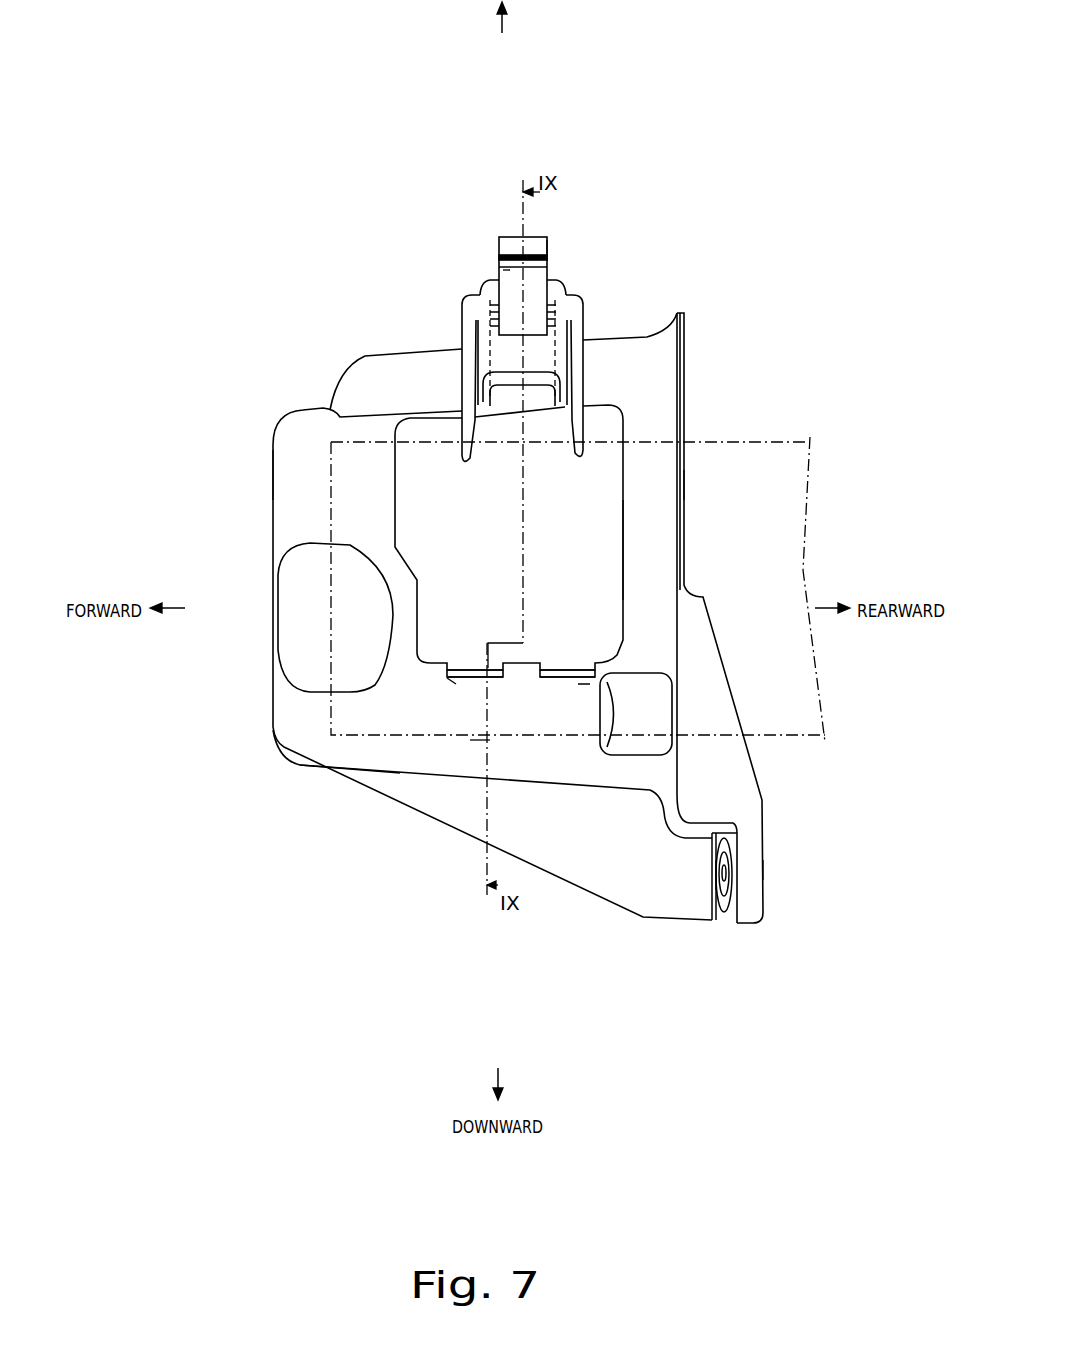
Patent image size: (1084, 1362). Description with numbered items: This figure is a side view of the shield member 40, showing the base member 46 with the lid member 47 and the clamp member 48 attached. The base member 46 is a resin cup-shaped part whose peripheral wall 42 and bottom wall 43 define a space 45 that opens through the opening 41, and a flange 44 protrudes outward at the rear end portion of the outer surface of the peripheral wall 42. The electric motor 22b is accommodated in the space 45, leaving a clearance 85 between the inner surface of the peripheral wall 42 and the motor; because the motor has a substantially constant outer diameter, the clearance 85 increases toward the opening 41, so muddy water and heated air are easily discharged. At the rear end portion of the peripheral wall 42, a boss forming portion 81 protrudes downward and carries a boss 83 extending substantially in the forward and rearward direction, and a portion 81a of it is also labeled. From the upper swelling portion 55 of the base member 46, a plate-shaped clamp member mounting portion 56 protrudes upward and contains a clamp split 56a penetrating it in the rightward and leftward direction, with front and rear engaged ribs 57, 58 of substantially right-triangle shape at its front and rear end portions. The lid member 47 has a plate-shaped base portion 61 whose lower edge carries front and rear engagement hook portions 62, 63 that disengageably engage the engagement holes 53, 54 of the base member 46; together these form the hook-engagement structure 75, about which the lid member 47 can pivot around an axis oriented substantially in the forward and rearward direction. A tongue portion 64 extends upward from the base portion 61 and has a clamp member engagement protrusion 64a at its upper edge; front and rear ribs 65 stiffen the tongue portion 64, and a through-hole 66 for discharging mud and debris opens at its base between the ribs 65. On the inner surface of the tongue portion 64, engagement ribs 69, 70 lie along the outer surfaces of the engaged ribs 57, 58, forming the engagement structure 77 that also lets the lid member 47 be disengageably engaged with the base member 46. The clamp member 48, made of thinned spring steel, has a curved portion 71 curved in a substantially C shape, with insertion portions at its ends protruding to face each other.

The electric motor 22b is at (330, 707).
The shield member 40 is at (752, 238).
The opening 41 is at (684, 482).
The peripheral wall 42 is at (355, 428).
The bottom wall 43 is at (273, 472).
The flange 44 is at (678, 310).
The space 45 is at (302, 530).
The base member 46 is at (342, 747).
The lid member 47 is at (595, 557).
The clamp member 48 is at (537, 237).
The engagement hole 53 is at (468, 678).
The engagement hole 54 is at (556, 678).
The upper swelling portion 55 is at (403, 367).
The clamp member mounting portion 56 is at (490, 283).
The clamp split 56a is at (506, 272).
The engaged rib 57 is at (467, 303).
The engaged rib 58 is at (563, 317).
The base portion 61 is at (423, 493).
The engagement hook portion 62 is at (483, 678).
The engagement hook portion 63 is at (563, 678).
The tongue portion 64 is at (477, 297).
The clamp member engagement protrusion 64a is at (562, 277).
The rib 65 is at (465, 462).
The through-hole 66 is at (528, 400).
The engagement rib 69 is at (467, 323).
The engagement rib 70 is at (570, 323).
The curved portion 71 is at (548, 247).
The hook-engagement structure 75 is at (578, 681).
The engagement structure 77 is at (603, 293).
The boss forming portion 81 is at (753, 857).
The grommet flange 81a is at (763, 867).
The boss 83 is at (717, 877).
The clearance 85 is at (472, 740).